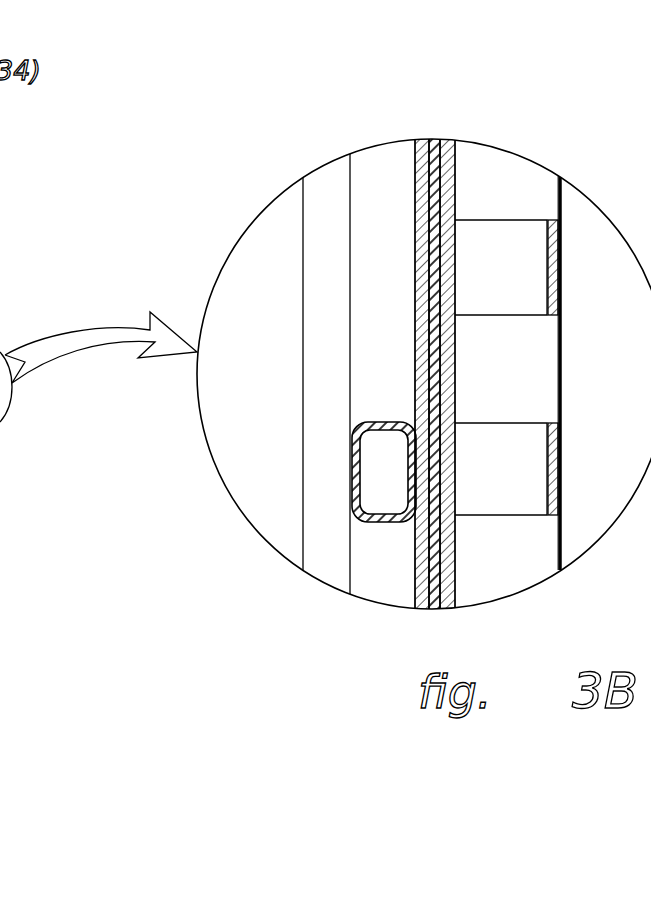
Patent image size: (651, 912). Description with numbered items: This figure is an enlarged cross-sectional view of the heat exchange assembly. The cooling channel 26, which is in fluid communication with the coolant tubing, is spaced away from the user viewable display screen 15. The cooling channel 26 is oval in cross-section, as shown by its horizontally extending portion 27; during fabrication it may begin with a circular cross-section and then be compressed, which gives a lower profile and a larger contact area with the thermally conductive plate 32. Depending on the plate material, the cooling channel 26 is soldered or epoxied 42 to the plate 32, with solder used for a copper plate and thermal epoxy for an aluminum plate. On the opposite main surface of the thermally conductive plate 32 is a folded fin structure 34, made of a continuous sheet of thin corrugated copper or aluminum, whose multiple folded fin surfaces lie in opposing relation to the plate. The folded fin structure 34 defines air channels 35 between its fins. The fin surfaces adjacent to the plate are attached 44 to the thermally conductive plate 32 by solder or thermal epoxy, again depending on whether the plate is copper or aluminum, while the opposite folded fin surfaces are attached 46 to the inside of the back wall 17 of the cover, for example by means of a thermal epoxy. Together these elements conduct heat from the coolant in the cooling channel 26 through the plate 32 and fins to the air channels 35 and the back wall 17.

The user viewable display screen 15 is at (305, 436).
The back wall 17 is at (562, 338).
The cooling channel 26 is at (388, 160).
The horizontally extending portion 27 is at (383, 421).
The thermally conductive plate 32 is at (433, 137).
The folded fin structure 34 is at (497, 220).
The air channels 35 is at (527, 285).
The solder or epoxy attachment 42 is at (423, 607).
The attachment of fin surfaces to plate 44 is at (447, 140).
The attachment of fin surfaces to back wall 46 is at (553, 258).